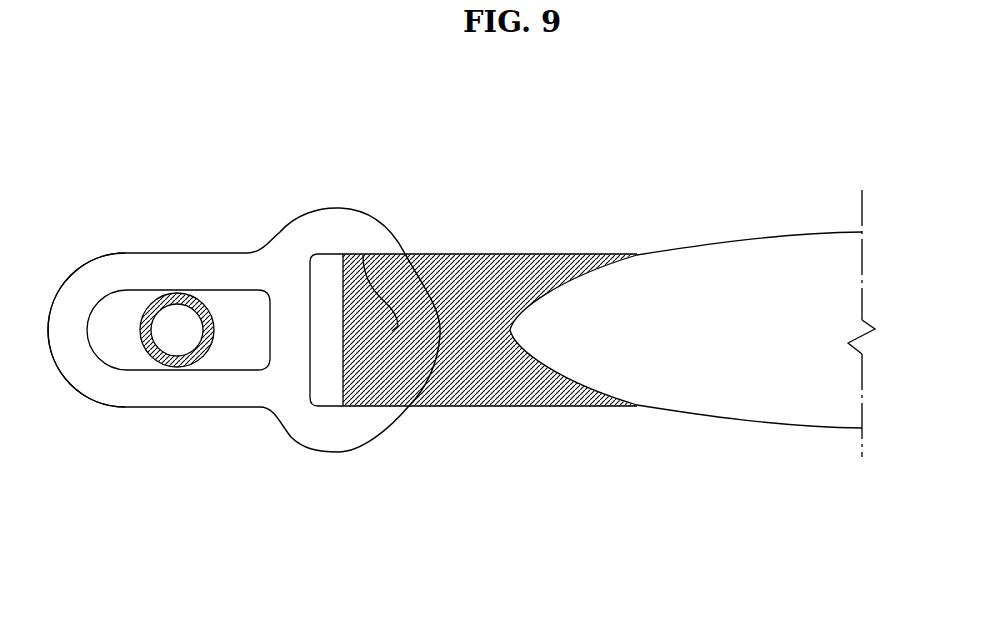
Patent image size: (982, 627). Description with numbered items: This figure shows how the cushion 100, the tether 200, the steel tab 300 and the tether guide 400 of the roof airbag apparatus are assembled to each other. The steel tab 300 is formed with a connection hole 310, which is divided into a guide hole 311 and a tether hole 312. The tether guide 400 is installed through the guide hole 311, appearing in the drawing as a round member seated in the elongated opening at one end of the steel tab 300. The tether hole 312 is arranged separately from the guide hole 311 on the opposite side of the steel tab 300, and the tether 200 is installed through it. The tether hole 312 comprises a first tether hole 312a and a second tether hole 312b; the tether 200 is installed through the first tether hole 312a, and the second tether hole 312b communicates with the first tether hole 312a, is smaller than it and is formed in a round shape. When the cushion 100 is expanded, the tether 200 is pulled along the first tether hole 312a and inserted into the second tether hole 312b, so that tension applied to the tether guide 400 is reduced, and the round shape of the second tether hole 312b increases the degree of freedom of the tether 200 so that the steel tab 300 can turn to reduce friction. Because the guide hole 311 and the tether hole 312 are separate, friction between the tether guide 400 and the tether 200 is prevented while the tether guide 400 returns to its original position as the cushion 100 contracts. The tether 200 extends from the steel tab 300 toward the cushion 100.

The cushion 100 is at (677, 273).
The tether 200 is at (468, 277).
The steel tab 300 is at (284, 207).
The connection hole 310 is at (385, 572).
The guide hole 311 is at (203, 360).
The tether hole 312 is at (450, 504).
The first tether hole 312a is at (338, 400).
The second tether hole 312b is at (386, 333).
The tether guide 400 is at (163, 292).